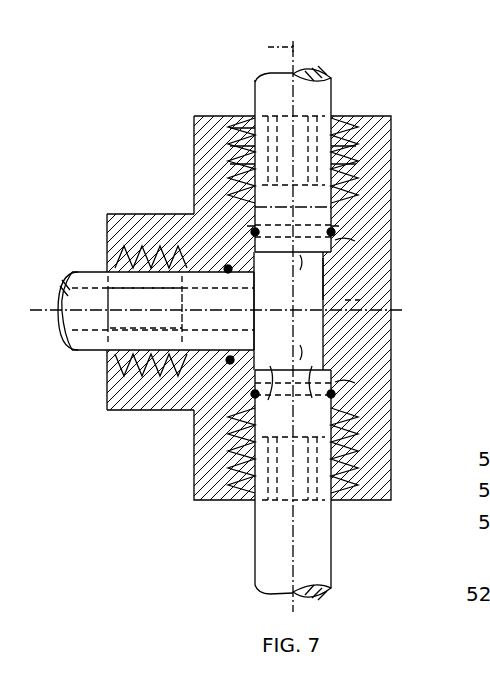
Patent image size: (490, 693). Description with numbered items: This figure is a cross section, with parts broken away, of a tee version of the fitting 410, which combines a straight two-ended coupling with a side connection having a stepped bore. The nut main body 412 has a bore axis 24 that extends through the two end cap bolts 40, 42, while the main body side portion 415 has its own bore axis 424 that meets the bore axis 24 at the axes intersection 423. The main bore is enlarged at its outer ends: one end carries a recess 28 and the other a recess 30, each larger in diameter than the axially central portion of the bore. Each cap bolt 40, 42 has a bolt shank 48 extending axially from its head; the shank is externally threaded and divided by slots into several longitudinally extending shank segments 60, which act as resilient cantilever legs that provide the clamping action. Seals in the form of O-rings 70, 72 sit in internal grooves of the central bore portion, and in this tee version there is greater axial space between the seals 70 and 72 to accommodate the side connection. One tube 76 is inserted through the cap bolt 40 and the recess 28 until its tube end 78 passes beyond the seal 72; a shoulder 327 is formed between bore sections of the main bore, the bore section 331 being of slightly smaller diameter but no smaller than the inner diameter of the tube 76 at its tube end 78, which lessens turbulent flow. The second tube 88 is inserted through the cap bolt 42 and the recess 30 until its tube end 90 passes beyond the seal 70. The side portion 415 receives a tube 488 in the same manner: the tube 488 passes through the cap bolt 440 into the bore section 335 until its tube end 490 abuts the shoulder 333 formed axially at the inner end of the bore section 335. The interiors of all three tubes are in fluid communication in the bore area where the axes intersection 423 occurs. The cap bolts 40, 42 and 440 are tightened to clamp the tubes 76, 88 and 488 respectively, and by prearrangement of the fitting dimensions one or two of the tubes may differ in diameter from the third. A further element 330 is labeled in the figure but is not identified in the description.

The fitting axis 24 is at (283, 47).
The recess 28 is at (360, 192).
The recess 30 is at (350, 432).
The cap bolt 40 is at (246, 112).
The cap bolt 42 is at (243, 498).
The bolt shank 48 is at (338, 125).
The shank segments 60 is at (243, 122).
The O-ring 70 is at (226, 260).
The O-ring 72 is at (340, 230).
The tube 76 is at (257, 80).
The tube end 78 is at (304, 268).
The tube 88 is at (253, 538).
The tube end 90 is at (304, 364).
The shoulder 327 is at (342, 242).
The boss 330 is at (176, 412).
The bore section 331 is at (328, 262).
The shoulder 333 is at (169, 311).
The bore section 335 is at (192, 240).
The fitting 410 is at (181, 128).
The nut main body 412 is at (392, 335).
The main body side portion 415 is at (110, 412).
The axes intersection 423 is at (362, 300).
The bore axis 424 is at (108, 256).
The cap bolt 440 is at (108, 218).
The tube 488 is at (80, 349).
The tube end 490 is at (287, 394).